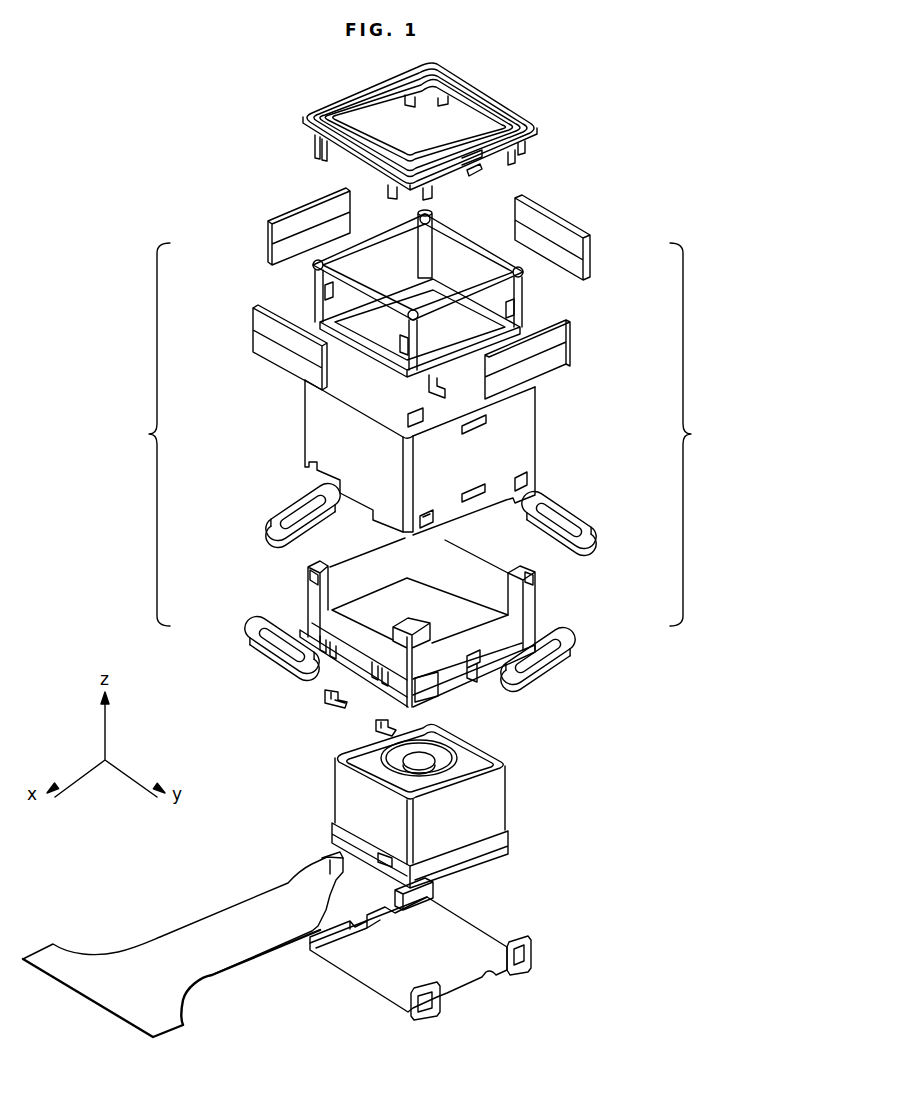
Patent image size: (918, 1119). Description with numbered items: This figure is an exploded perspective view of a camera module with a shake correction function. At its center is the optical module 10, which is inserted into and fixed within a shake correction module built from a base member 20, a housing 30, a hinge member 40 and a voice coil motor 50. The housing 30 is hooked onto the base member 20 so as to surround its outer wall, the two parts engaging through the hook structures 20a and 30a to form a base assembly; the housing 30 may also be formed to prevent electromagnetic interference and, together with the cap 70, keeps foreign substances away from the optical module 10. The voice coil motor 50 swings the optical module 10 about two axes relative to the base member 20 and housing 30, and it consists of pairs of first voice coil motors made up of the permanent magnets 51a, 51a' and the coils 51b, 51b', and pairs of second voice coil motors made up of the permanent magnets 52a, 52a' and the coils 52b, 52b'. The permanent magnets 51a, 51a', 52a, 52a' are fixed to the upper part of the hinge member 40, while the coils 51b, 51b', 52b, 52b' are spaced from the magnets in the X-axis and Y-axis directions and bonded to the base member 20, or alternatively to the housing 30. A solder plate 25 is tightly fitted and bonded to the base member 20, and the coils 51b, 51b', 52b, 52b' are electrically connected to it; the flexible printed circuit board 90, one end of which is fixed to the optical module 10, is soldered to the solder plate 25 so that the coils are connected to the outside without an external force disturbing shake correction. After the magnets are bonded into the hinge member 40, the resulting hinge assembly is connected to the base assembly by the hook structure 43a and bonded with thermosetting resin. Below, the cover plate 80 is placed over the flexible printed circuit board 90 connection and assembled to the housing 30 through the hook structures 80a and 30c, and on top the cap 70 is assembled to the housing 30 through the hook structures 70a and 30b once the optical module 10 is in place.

The optical module 10 is at (492, 804).
The base member 20 is at (528, 604).
The hook structure 20a is at (478, 668).
The solder plate 25 is at (322, 698).
The housing 30 is at (535, 452).
The hook structure 30a is at (478, 494).
The hook structure 30b is at (487, 426).
The hook structure 30c is at (530, 482).
The hinge member 40 is at (316, 266).
The hook structure 43a is at (447, 398).
The voice coil motor 50 is at (422, 434).
The permanent magnet 51a is at (589, 237).
The permanent magnet 51a' is at (252, 347).
The coil 51b is at (590, 518).
The coil 51b' is at (251, 648).
The permanent magnet 52a is at (567, 359).
The permanent magnet 52a' is at (264, 226).
The coil 52b is at (580, 652).
The coil 52b' is at (261, 515).
The cap 70 is at (513, 110).
The hook structure 70a is at (487, 176).
The cover plate 80 is at (465, 938).
The hook structure 80a is at (530, 970).
The flexible printed circuit board 90 is at (283, 902).